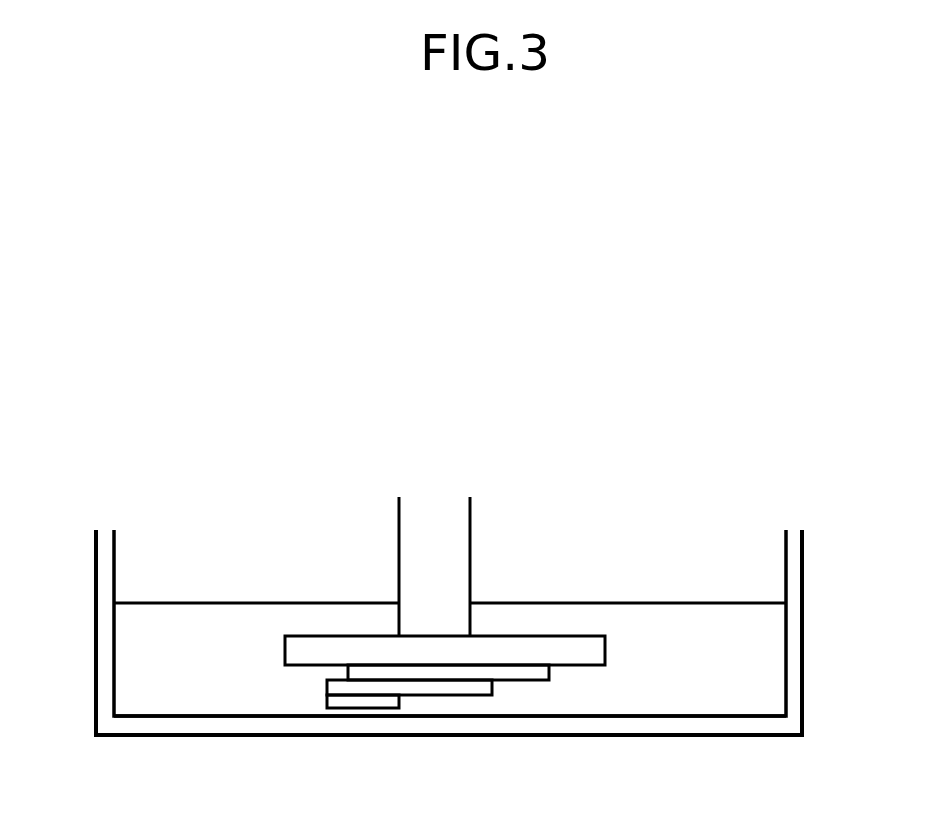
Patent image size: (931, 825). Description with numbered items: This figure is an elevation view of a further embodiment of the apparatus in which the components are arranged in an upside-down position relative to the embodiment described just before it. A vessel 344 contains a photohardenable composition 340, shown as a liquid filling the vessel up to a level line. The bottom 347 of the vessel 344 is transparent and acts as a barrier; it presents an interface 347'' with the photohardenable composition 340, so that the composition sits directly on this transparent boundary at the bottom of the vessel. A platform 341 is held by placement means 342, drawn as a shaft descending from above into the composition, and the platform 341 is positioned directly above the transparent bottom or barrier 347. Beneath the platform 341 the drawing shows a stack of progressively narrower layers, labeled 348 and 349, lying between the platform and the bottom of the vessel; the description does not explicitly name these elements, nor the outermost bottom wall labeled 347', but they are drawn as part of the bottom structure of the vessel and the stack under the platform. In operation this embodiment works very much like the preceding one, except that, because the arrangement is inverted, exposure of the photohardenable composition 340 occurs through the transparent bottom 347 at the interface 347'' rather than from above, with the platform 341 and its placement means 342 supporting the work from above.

The photohardenable composition 340 is at (650, 702).
The platform 341 is at (322, 635).
The placement means 342 is at (433, 508).
The vessel 344 is at (787, 545).
The bottom 347 is at (413, 660).
The outer bottom wall 347' is at (446, 778).
The interface 347'' is at (405, 683).
The spacer plates 348 is at (438, 706).
The bottom spacer plate 349 is at (355, 714).